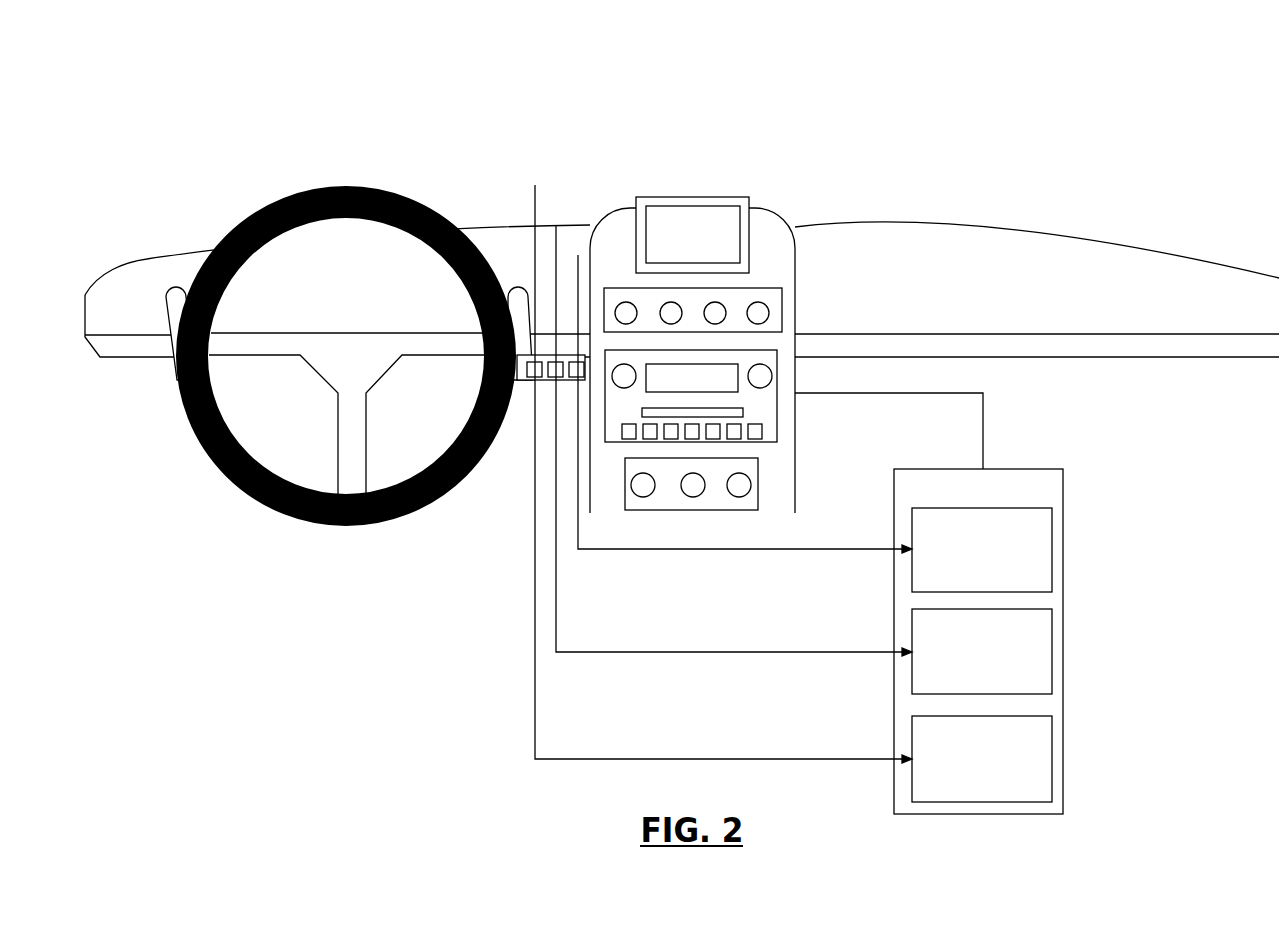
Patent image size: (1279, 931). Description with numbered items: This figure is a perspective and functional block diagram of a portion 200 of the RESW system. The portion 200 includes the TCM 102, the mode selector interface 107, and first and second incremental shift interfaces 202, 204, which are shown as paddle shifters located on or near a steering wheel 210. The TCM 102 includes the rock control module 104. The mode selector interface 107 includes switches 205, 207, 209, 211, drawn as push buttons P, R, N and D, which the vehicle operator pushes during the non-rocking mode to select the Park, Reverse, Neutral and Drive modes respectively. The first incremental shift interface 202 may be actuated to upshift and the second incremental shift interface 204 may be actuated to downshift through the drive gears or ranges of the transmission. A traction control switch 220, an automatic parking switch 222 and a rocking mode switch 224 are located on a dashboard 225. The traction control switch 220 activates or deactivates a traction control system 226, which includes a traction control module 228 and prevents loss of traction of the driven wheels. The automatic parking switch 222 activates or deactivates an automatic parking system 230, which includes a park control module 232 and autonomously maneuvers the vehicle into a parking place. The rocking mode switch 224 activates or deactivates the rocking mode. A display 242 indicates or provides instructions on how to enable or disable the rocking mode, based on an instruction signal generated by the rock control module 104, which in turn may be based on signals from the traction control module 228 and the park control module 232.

The portion of the RESW system 200 is at (191, 62).
The steering wheel 210 is at (255, 213).
The first incremental shift interface 202 is at (515, 290).
The second incremental shift interface 204 is at (166, 300).
The traction control switch 220 is at (535, 185).
The automatic parking switch 222 is at (556, 225).
The rocking mode switch 224 is at (578, 255).
The display 242 is at (694, 205).
The switch 205 is at (637, 305).
The switch 207 is at (683, 310).
The switch 209 is at (727, 312).
The switch 211 is at (770, 305).
The mode selector interface 107 is at (782, 312).
The dashboard 225 is at (1054, 236).
The TCM 102 is at (1038, 468).
The rock control module 104 is at (1052, 548).
The park control module 232 is at (1052, 650).
The traction control module 228 is at (1052, 757).
The automatic parking system 230 is at (1112, 665).
The traction control system 226 is at (1089, 786).